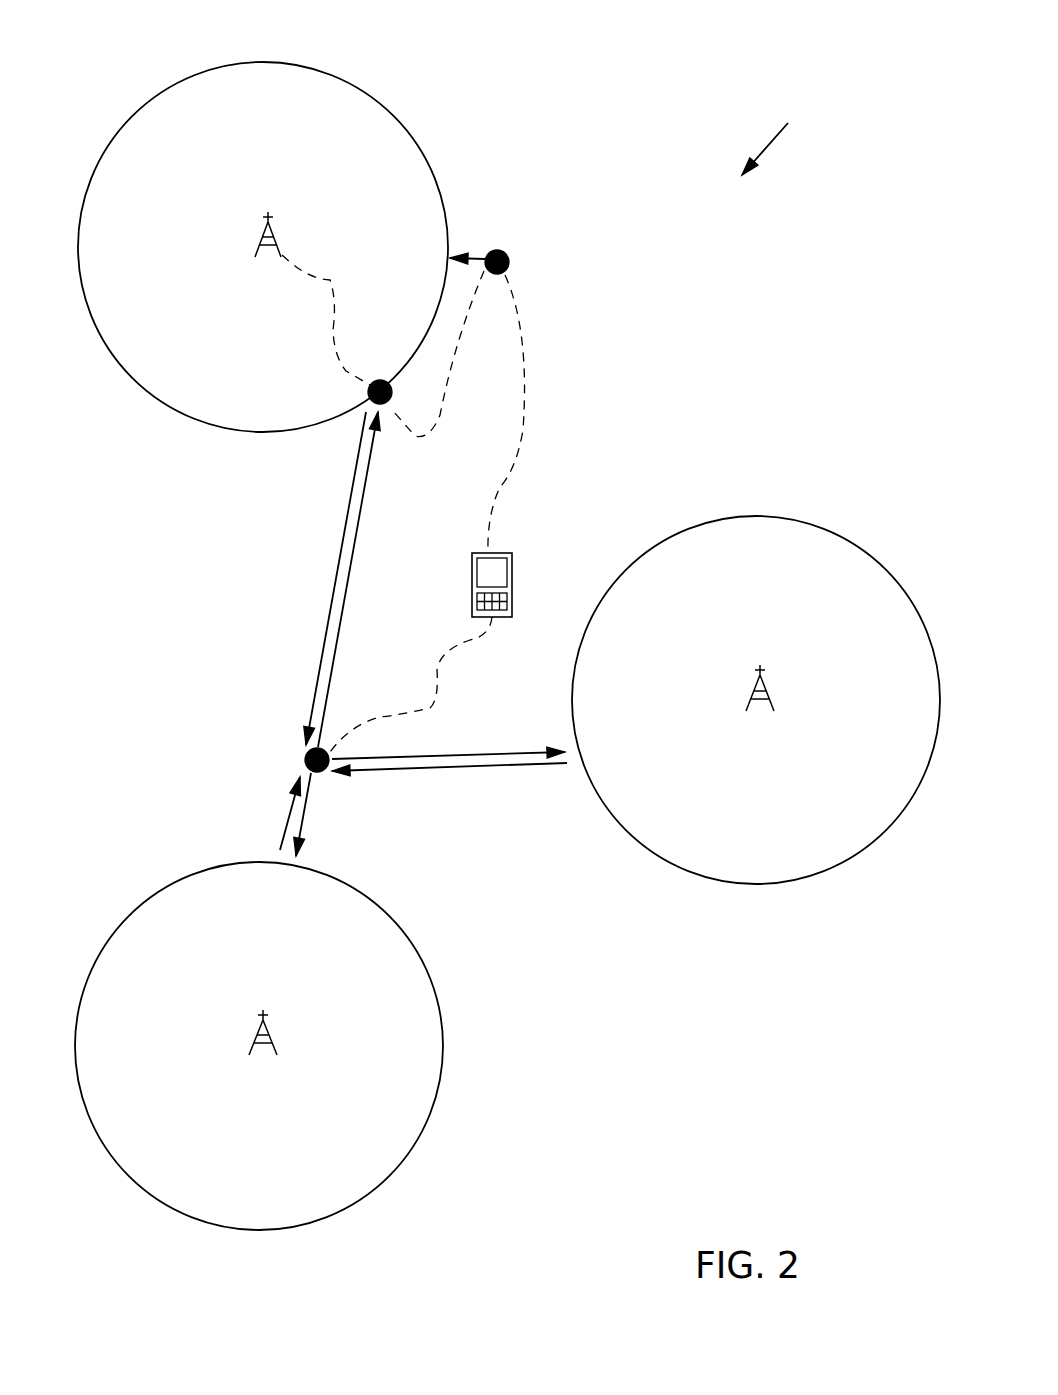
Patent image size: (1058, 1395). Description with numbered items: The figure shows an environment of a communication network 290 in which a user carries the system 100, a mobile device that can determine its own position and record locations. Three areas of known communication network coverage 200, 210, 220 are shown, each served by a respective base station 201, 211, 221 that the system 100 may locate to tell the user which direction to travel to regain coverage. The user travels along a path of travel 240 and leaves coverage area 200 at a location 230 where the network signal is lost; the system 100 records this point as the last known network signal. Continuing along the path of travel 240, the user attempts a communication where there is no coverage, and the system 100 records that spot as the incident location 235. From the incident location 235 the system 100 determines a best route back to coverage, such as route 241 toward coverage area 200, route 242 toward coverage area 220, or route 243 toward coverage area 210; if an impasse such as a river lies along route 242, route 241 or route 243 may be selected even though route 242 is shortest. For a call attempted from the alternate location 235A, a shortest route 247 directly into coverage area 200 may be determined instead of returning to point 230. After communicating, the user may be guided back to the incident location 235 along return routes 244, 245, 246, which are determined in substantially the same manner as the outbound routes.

The system 100 is at (512, 553).
The communication network coverage area 200 is at (422, 100).
The base station 201 is at (255, 223).
The communication network coverage area 210 is at (821, 871).
The base station 211 is at (771, 685).
The communication network coverage area 220 is at (359, 1199).
The base station 221 is at (246, 1057).
The location where the communication network signal is lost 230 is at (365, 388).
The incident location 235 is at (302, 757).
The location of attempted call 235A is at (508, 253).
The path of travel 240 is at (520, 435).
The route 241 is at (345, 595).
The route 242 is at (309, 810).
The route 243 is at (487, 753).
The return route 244 is at (338, 555).
The return route 245 is at (282, 827).
The return route 246 is at (508, 765).
The shortest route 247 is at (478, 250).
The communication network 290 is at (789, 135).